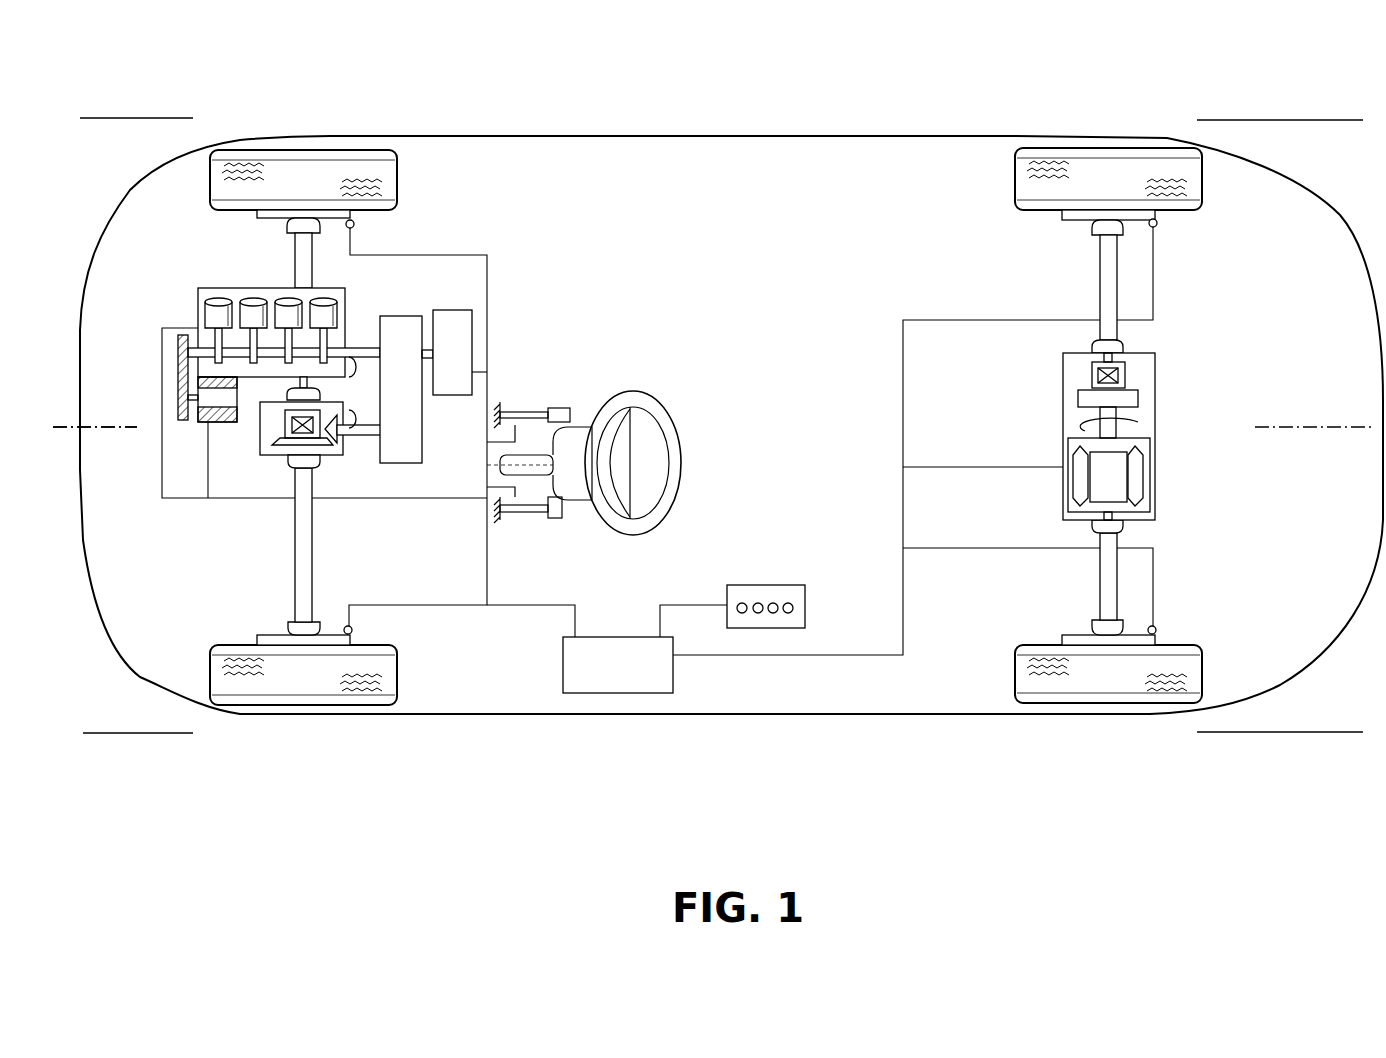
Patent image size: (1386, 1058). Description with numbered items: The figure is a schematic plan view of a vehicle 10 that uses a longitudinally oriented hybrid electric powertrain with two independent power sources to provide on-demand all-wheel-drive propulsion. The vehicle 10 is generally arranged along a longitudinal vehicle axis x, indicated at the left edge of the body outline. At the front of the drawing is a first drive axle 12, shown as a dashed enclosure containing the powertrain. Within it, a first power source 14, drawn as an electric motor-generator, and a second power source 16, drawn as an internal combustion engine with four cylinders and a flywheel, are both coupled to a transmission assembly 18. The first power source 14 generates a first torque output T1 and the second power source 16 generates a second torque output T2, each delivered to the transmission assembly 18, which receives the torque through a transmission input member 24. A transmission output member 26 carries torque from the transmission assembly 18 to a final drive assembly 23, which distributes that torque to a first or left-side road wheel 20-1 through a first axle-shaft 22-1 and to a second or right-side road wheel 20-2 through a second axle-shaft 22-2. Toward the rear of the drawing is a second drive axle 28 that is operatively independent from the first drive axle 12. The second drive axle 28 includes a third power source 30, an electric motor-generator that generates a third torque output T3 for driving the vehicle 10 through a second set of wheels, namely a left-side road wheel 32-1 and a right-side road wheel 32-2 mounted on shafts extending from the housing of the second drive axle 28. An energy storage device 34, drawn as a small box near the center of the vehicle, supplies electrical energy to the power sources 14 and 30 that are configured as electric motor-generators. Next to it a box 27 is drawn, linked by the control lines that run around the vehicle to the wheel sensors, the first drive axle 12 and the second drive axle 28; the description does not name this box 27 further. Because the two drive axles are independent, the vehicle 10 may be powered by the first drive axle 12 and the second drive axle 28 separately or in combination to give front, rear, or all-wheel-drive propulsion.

The vehicle 10 is at (545, 105).
The first drive axle 12 is at (150, 310).
The first power source 14 is at (447, 352).
The second power source 16 is at (240, 288).
The transmission assembly 18 is at (401, 389).
The left-side road wheel 20-1 is at (278, 716).
The right-side road wheel 20-2 is at (268, 143).
The first axle-shaft 22-1 is at (295, 578).
The second axle-shaft 22-2 is at (293, 273).
The final drive assembly 23 is at (260, 447).
The transmission input member 24 is at (363, 348).
The transmission output member 26 is at (368, 437).
The controller 27 is at (618, 665).
The second drive axle 28 is at (1166, 387).
The third power source 30 is at (1155, 480).
The left-side road wheel 32-1 is at (1175, 712).
The right-side road wheel 32-2 is at (1122, 136).
The energy storage device 34 is at (766, 585).
The first torque output T1 is at (356, 336).
The second torque output T2 is at (356, 454).
The third torque output T3 is at (1086, 431).
The longitudinal vehicle axis x is at (72, 430).